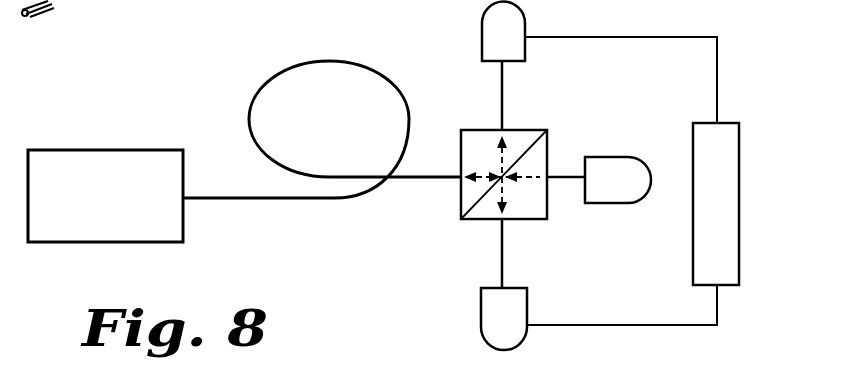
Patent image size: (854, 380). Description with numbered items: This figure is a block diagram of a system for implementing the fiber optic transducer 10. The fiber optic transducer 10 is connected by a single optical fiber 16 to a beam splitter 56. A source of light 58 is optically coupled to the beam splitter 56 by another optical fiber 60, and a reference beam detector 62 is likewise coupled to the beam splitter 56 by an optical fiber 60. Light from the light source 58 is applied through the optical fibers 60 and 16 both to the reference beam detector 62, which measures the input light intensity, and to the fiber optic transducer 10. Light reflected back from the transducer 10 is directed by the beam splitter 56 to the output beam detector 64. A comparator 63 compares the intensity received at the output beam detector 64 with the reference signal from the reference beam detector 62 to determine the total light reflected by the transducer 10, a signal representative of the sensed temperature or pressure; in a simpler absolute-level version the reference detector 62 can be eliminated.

The fiber optic transducer 10 is at (118, 149).
The optical fiber 16 is at (287, 200).
The beam splitter 56 is at (526, 130).
The source of light 58 is at (613, 156).
The optical fiber 60 is at (501, 250).
The reference beam detector 62 is at (528, 318).
The comparator 63 is at (740, 141).
The output beam detector 64 is at (527, 22).